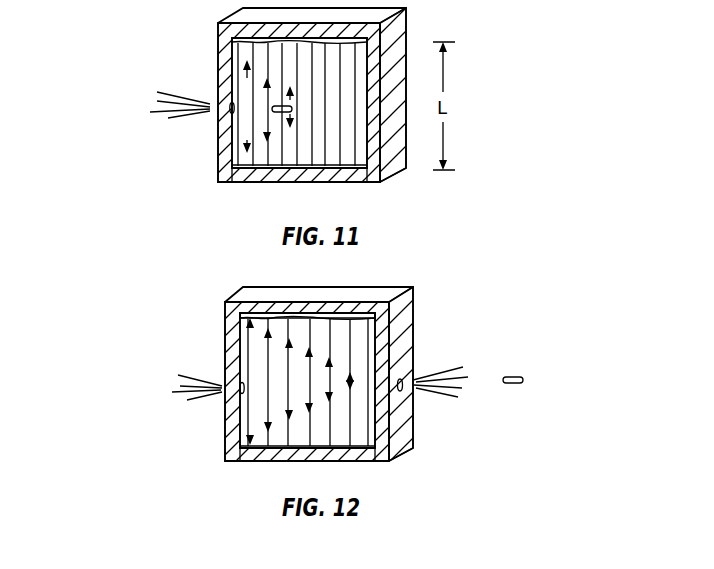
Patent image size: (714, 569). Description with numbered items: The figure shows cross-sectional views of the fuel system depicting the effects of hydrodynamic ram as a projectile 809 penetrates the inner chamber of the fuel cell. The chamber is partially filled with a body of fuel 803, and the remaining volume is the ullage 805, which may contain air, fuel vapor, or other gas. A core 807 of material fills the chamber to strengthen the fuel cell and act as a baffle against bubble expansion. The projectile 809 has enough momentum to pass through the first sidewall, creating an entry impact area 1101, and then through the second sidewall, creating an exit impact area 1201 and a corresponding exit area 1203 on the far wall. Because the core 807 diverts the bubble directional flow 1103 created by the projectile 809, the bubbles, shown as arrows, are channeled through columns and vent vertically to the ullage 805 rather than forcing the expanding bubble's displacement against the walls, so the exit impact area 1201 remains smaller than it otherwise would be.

In FIG. 11, the entry impact area 1101 is at (214, 91).
In FIG. 11, the bubble directional flow 1103 is at (246, 136).
In FIG. 12, the bubble directional flow 1103 is at (248, 433).
In FIG. 11, the core 807 is at (318, 169).
In FIG. 12, the core 807 is at (388, 342).
In FIG. 12, the ullage 805 is at (272, 308).
In FIG. 12, the fuel 803 is at (248, 357).
In FIG. 12, the exit impact area 1201 is at (229, 405).
In FIG. 12, the second aperture 1203 is at (413, 403).
In FIG. 12, the projectile 809 is at (515, 375).